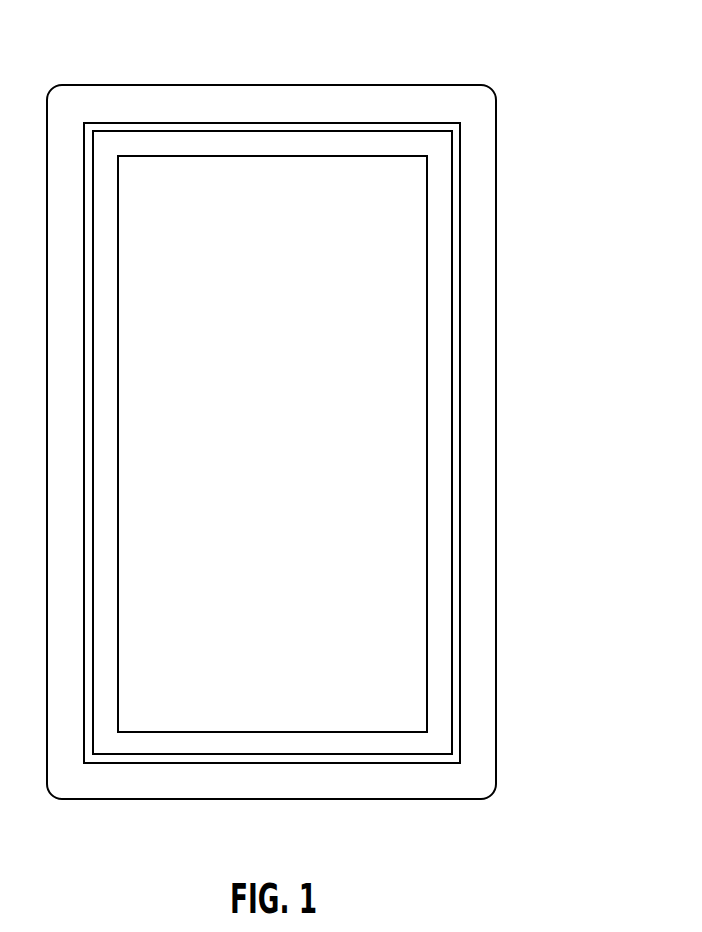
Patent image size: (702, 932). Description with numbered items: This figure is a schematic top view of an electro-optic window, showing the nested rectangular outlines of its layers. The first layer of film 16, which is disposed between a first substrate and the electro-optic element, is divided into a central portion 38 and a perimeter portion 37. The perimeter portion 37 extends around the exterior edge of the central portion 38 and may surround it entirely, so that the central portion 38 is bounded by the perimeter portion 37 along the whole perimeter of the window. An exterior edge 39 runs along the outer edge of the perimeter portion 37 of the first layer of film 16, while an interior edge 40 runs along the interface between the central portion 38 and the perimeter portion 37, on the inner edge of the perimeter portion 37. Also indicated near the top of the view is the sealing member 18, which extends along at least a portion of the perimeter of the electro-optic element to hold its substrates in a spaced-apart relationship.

The first layer of film 16 is at (383, 410).
The sealing member 18 is at (287, 130).
The perimeter portion 37 is at (437, 330).
The central portion 38 is at (383, 275).
The exterior edge 39 is at (497, 475).
The interior edge 40 is at (425, 565).